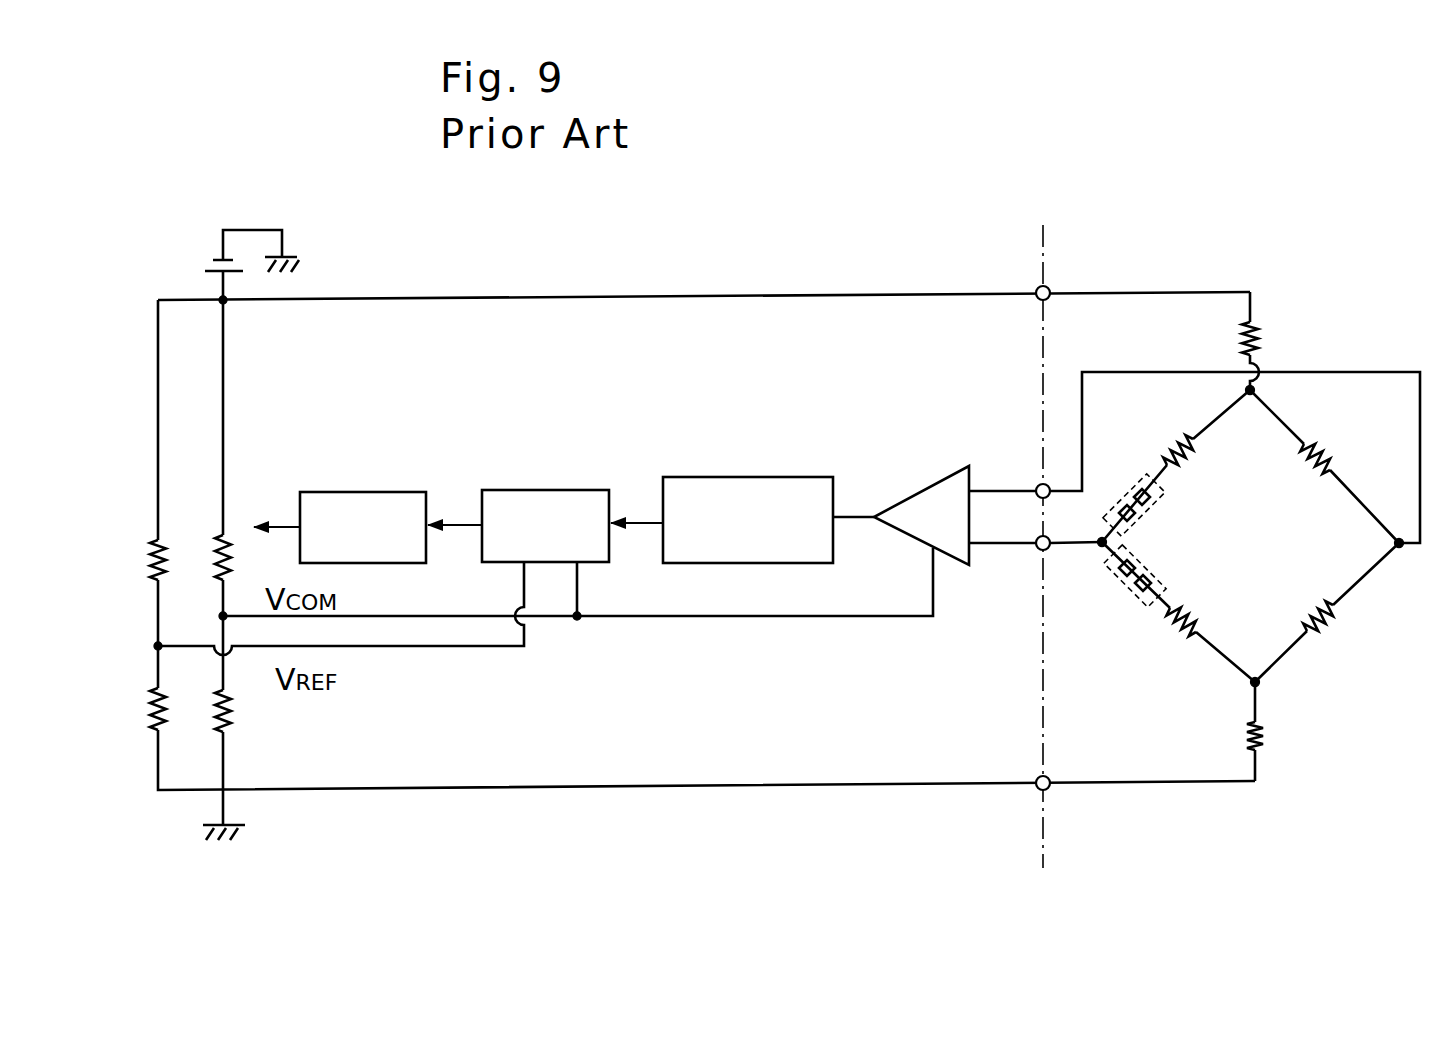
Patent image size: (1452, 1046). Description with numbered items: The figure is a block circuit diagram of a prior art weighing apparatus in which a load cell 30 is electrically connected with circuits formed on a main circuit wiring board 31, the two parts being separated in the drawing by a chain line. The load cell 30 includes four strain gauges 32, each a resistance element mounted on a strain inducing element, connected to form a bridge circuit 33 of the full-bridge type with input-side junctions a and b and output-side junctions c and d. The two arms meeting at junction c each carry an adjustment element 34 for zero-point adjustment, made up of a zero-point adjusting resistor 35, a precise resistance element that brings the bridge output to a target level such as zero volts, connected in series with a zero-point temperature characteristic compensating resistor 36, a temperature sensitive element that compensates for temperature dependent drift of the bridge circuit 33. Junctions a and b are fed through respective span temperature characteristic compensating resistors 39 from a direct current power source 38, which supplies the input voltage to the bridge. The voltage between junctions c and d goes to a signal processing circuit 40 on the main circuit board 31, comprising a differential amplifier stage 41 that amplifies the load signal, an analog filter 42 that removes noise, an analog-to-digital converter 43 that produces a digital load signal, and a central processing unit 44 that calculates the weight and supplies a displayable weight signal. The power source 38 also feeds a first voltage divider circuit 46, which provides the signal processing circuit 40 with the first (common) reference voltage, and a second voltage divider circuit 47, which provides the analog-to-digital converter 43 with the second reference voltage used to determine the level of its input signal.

The load cell 30 is at (1063, 840).
The main circuit wiring board 31 is at (1025, 840).
The strain gauge 32 is at (1168, 452).
The bridge circuit 33 is at (1325, 410).
The adjustment element 34 is at (1185, 605).
The zero-point adjusting resistor 35 is at (1150, 497).
The zero-point temperature characteristic compensating resistor 36 is at (1135, 520).
The direct current power source 38 is at (205, 262).
The span temperature characteristic compensating resistor 39 is at (1265, 333).
The signal processing circuit 40 is at (935, 398).
The differential amplifier stage 41 is at (911, 492).
The analog filter 42 is at (747, 477).
The analog-to-digital converter 43 is at (540, 490).
The central processing unit 44 is at (366, 490).
The first voltage divider circuit 46 is at (207, 533).
The second voltage divider circuit 47 is at (133, 553).